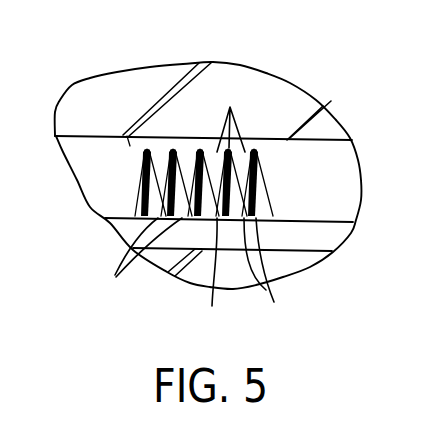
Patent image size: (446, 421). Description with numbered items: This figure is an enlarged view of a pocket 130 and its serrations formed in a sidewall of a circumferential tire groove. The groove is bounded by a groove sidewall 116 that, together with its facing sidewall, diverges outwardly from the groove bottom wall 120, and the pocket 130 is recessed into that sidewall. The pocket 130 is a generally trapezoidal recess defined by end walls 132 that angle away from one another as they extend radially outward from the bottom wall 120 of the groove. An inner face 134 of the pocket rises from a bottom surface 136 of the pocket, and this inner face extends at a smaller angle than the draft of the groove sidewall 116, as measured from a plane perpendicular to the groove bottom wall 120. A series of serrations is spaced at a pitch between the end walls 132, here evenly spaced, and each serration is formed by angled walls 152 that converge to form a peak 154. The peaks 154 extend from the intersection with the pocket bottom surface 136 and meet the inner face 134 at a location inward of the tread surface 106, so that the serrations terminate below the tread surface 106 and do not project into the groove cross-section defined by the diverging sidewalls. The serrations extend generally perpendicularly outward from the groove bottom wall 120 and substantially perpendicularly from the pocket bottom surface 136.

The surface of the tread 106 is at (118, 82).
The first sidewall 116 is at (87, 172).
The groove bottom wall 120 is at (322, 250).
The pocket 130 is at (296, 172).
The end walls 132 is at (135, 157).
The inner face 134 is at (263, 150).
The bottom surface 136 is at (215, 277).
The angled walls 152 is at (203, 275).
The peak 154 is at (183, 147).